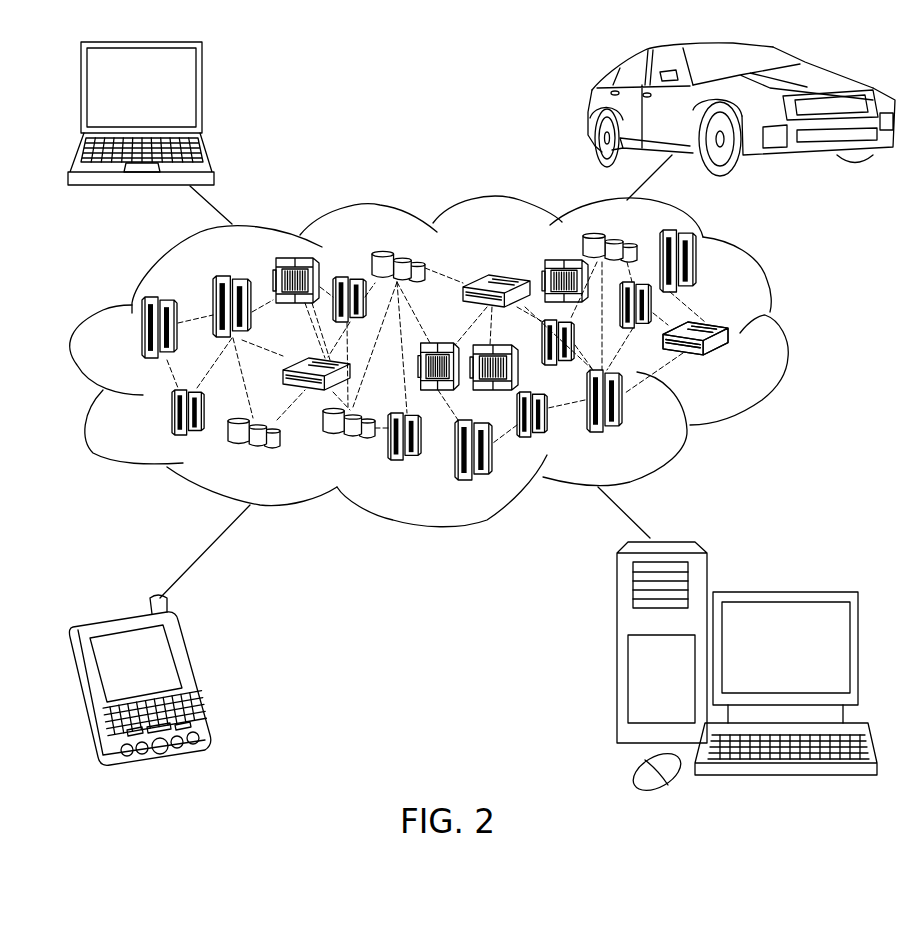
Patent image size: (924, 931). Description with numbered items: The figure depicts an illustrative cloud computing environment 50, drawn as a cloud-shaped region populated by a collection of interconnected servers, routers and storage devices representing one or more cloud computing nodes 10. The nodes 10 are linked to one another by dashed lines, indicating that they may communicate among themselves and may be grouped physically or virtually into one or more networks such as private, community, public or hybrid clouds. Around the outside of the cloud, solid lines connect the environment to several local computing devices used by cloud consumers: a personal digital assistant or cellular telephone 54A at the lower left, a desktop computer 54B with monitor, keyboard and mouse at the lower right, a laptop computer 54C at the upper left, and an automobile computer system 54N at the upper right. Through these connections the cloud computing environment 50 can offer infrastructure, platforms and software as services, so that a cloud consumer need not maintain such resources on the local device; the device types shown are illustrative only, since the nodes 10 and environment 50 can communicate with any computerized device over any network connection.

The cloud computing node 10 is at (733, 363).
The cloud computing environment 50 is at (783, 334).
The personal digital assistant or cellular telephone 54A is at (193, 673).
The desktop computer 54B is at (782, 592).
The laptop computer 54C is at (202, 93).
The automobile computer system 54N is at (590, 110).